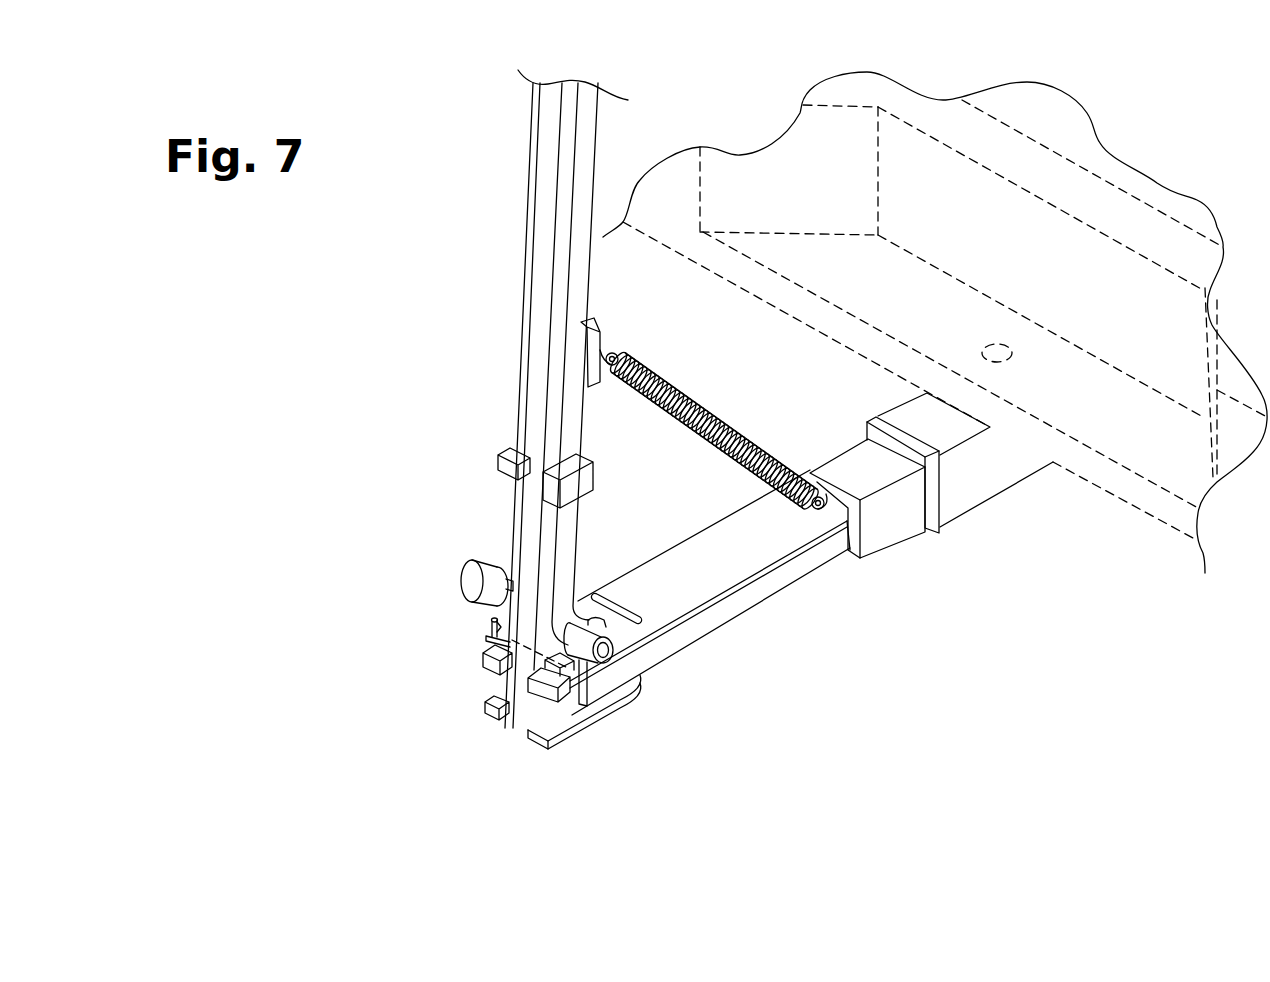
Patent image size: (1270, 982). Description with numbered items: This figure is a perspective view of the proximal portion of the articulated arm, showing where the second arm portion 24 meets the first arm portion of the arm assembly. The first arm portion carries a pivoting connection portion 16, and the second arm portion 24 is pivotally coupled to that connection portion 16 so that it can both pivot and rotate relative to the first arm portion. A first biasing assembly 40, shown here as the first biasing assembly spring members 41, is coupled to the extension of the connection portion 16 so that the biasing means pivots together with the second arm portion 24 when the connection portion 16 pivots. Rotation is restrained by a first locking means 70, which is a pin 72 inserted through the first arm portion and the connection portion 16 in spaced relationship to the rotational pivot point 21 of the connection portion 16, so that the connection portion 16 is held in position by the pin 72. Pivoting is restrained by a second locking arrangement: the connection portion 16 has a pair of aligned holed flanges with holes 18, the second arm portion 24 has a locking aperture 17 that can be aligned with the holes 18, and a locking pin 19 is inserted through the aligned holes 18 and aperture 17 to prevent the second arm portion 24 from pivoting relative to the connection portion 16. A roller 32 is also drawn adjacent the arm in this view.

The pivoting connection portion 16 is at (490, 712).
The locking aperture 17 is at (522, 647).
The holes 18 is at (553, 735).
The locking pin 19 is at (490, 624).
The rotational pivot point 21 is at (636, 616).
The second arm portion 24 is at (545, 234).
The roller 32 is at (466, 568).
The first biasing assembly 40 is at (707, 376).
The first biasing assembly spring members 41 is at (775, 460).
The first locking means 70 is at (636, 571).
The pin 72 is at (632, 620).